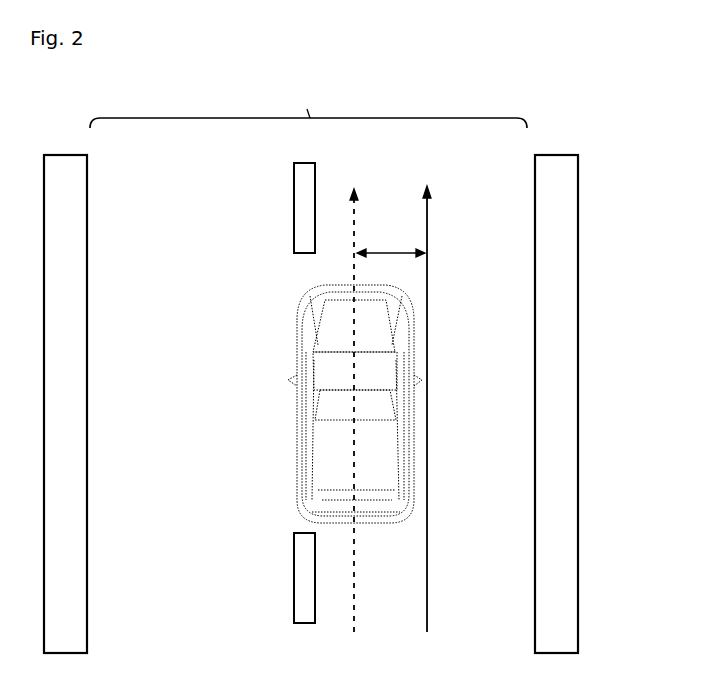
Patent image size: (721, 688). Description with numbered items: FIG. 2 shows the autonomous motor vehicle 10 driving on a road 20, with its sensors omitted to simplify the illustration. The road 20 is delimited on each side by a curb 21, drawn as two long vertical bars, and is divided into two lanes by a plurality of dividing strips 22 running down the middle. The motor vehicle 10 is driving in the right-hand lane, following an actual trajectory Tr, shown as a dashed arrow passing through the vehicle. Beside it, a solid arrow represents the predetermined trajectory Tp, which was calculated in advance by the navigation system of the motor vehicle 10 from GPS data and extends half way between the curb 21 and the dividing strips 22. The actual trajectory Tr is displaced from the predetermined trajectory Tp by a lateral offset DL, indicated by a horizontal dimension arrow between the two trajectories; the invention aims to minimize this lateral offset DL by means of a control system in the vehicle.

The motor vehicle 10 is at (295, 345).
The road 20 is at (308, 102).
The curb 21 is at (578, 266).
The dividing strips 22 is at (300, 235).
The actual trajectory Tr is at (360, 203).
The predetermined trajectory Tp is at (430, 222).
The lateral offset DL is at (391, 238).